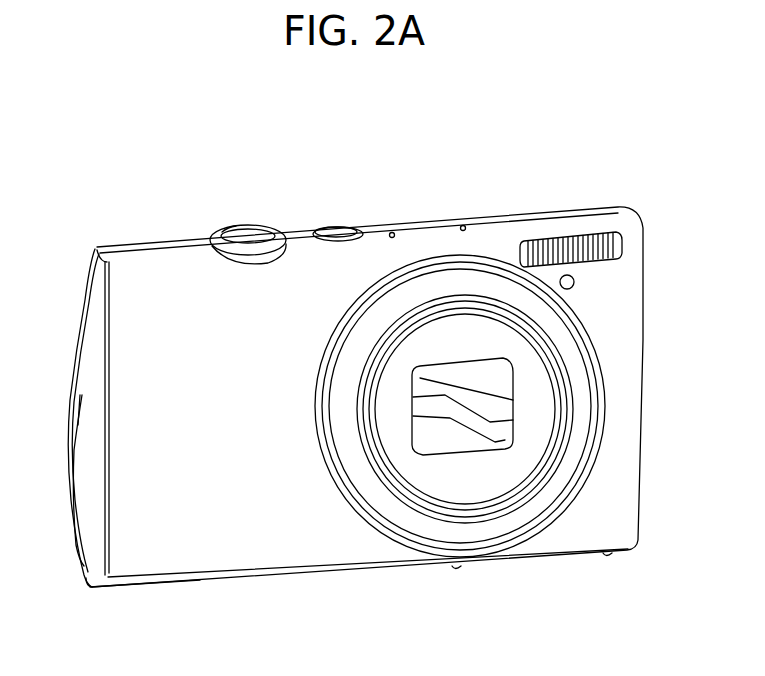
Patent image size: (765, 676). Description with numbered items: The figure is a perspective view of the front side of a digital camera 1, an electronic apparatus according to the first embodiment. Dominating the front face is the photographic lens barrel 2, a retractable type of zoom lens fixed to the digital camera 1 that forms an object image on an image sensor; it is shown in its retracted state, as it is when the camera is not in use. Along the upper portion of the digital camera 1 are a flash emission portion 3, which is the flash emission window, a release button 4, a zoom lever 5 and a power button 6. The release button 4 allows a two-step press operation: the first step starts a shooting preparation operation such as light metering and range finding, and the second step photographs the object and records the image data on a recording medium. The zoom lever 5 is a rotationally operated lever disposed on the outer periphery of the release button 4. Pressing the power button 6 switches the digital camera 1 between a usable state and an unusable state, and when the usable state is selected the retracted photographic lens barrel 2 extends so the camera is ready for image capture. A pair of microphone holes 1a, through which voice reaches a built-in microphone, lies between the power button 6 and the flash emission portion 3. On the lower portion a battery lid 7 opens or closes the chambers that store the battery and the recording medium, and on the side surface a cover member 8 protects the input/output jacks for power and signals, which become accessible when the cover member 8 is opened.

The digital camera 1 is at (626, 188).
The microphone holes 1a is at (392, 232).
The photographic lens barrel 2 is at (515, 453).
The flash emission portion 3 is at (623, 241).
The release button 4 is at (256, 234).
The zoom lever 5 is at (215, 238).
The power button 6 is at (334, 228).
The battery lid 7 is at (125, 590).
The cover member 8 is at (92, 332).